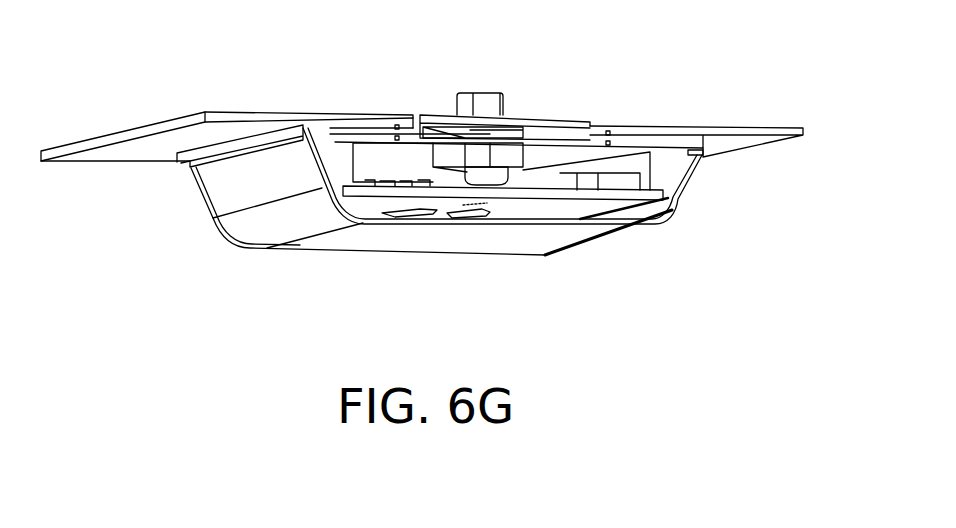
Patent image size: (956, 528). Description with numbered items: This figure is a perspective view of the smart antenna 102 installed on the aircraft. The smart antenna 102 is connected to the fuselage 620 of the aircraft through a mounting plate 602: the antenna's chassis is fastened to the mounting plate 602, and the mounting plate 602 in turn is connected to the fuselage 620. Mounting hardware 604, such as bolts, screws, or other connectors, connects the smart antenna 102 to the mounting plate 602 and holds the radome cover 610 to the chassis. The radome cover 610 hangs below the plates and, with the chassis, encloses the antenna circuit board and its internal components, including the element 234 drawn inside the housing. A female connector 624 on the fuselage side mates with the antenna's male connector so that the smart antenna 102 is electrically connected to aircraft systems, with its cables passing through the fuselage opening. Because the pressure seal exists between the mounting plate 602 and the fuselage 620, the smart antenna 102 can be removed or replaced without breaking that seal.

The smart antenna 102 is at (247, 35).
The fuselage 620 is at (222, 118).
The mounting plate 602 is at (570, 123).
The mounting hardware 604 is at (682, 148).
The female connector 624 is at (472, 98).
The sensor module 234 is at (452, 160).
The radome cover 610 is at (252, 242).